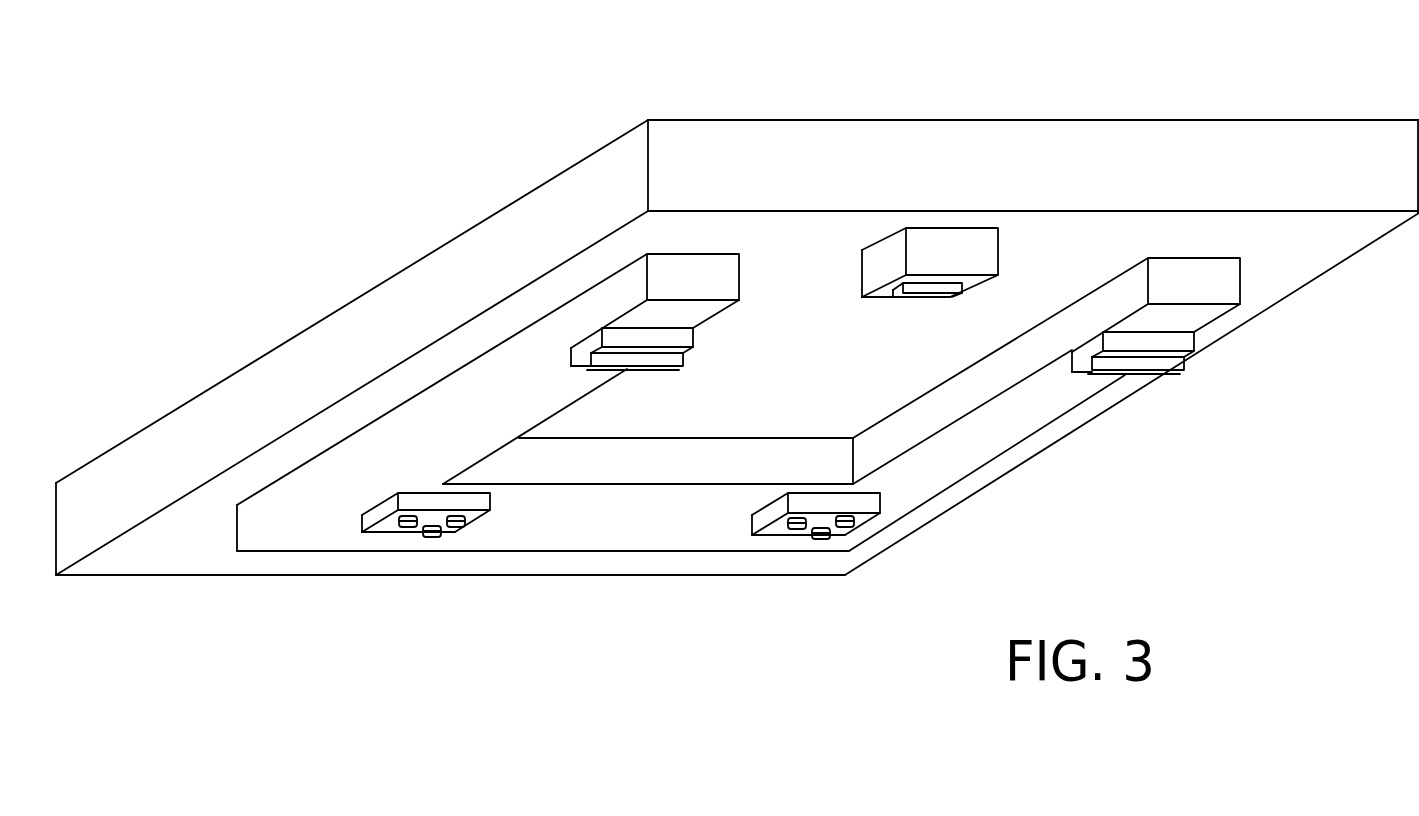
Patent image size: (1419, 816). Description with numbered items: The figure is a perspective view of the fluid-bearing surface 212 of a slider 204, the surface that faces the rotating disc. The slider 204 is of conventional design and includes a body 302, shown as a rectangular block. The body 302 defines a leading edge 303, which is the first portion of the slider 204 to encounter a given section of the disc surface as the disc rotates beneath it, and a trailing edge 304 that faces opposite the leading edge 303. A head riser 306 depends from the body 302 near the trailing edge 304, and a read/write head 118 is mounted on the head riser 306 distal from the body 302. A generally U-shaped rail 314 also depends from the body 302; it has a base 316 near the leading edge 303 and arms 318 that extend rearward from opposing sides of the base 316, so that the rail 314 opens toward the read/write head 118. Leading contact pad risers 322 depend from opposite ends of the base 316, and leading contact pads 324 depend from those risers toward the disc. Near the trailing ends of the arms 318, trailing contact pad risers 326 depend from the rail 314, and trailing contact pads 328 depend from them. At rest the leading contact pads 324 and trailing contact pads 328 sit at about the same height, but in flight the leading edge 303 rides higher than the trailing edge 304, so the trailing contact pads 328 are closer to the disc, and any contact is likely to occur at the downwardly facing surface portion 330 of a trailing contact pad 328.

The trailing edge 304 is at (831, 150).
The body 302 is at (208, 577).
The leading edge 303 is at (518, 598).
The fluid-bearing surface 212 is at (1298, 273).
The slider 204 is at (1197, 553).
The U-shaped rail 314 is at (694, 553).
The base 316 is at (617, 537).
The arms 318 is at (567, 387).
The head riser 306 is at (862, 298).
The read/write head 118 is at (930, 298).
The trailing contact pad risers 326 is at (1200, 342).
The trailing contact pads 328 is at (1185, 368).
The downwardly facing surface portion 330 is at (1134, 393).
The leading contact pad risers 322 is at (772, 535).
The leading contact pads 324 is at (822, 540).